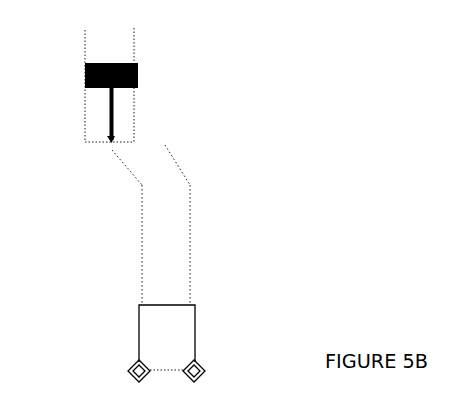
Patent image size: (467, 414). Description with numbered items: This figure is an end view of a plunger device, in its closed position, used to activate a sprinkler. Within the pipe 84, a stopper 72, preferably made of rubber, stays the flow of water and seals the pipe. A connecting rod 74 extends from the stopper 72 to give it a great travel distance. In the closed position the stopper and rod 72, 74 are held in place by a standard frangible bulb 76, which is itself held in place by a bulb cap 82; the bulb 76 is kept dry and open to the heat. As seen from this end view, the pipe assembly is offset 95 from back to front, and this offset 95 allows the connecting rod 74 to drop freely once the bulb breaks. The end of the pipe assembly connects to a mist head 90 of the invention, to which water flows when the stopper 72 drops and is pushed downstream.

The stopper 72 is at (74, 63).
The connecting rod 74 is at (62, 99).
The frangible bulb 76 is at (62, 116).
The bulb cap 82 is at (47, 86).
The pipe 84 is at (137, 44).
The mist head 90 is at (148, 335).
The offset 95 is at (217, 222).